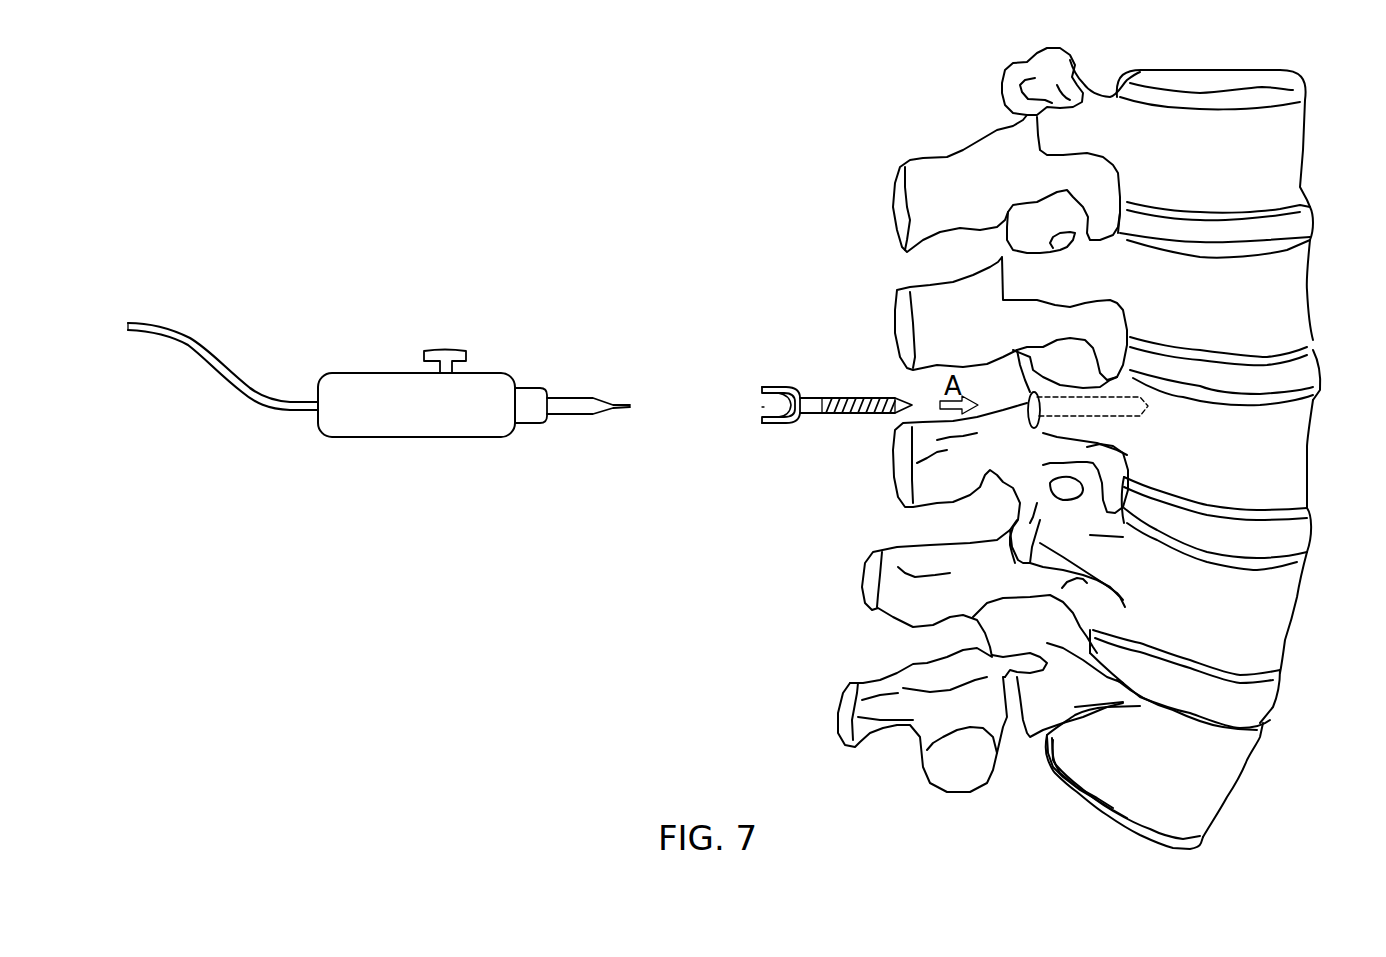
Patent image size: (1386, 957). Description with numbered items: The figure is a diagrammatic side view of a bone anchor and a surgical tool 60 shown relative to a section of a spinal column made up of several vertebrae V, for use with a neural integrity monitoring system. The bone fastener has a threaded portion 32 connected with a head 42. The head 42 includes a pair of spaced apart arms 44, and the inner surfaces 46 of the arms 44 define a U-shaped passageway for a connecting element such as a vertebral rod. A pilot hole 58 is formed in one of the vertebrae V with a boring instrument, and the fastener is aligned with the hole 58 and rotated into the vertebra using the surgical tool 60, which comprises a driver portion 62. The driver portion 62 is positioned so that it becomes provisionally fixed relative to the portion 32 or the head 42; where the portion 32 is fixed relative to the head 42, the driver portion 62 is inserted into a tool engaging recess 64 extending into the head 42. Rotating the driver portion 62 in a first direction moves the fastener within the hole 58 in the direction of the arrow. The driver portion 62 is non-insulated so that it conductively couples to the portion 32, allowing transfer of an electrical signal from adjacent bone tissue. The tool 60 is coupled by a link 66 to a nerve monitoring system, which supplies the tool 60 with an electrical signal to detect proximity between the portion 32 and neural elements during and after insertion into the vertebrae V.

The portion 32 is at (830, 448).
The head 42 is at (808, 370).
The arms 44 is at (763, 387).
The inner surfaces 46 is at (763, 407).
The pilot hole 58 is at (1148, 407).
The surgical tool 60 is at (382, 330).
The driver portion 62 is at (573, 378).
The tool engaging recess 64 is at (781, 394).
The link 66 is at (177, 330).
The vertebrae V is at (1277, 162).